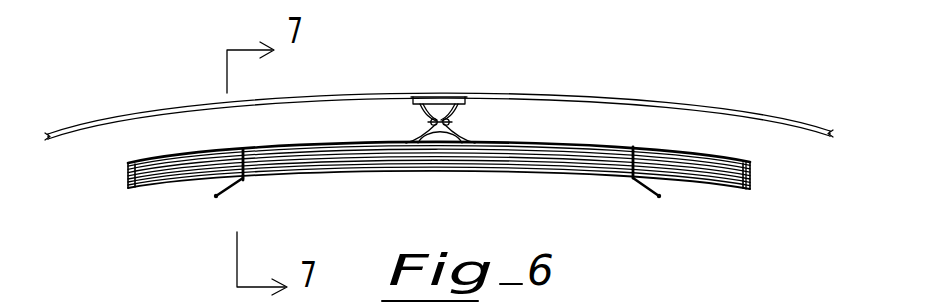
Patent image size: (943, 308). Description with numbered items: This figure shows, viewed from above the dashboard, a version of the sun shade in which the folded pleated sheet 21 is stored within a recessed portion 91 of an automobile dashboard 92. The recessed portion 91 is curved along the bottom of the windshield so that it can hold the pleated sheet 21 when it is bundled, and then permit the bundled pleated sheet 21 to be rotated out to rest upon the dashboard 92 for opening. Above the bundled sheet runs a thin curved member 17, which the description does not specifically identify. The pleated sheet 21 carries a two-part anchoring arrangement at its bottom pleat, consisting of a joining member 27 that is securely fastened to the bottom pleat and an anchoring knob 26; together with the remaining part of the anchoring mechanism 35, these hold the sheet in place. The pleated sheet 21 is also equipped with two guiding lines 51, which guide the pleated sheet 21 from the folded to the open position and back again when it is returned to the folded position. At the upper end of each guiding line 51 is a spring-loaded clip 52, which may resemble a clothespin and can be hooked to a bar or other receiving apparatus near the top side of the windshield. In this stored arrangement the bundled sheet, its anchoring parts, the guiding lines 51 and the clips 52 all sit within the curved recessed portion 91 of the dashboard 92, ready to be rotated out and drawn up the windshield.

The upper spring blade 17 is at (655, 98).
The pleated sheet 21 is at (124, 178).
The anchoring knob 26 is at (243, 170).
The joining member 27 is at (246, 180).
The anchoring mechanism 35 is at (658, 200).
The guiding line 51 is at (450, 141).
The spring-loaded clip 52 is at (428, 122).
The recessed portion 91 is at (752, 173).
The dashboard 92 is at (328, 113).